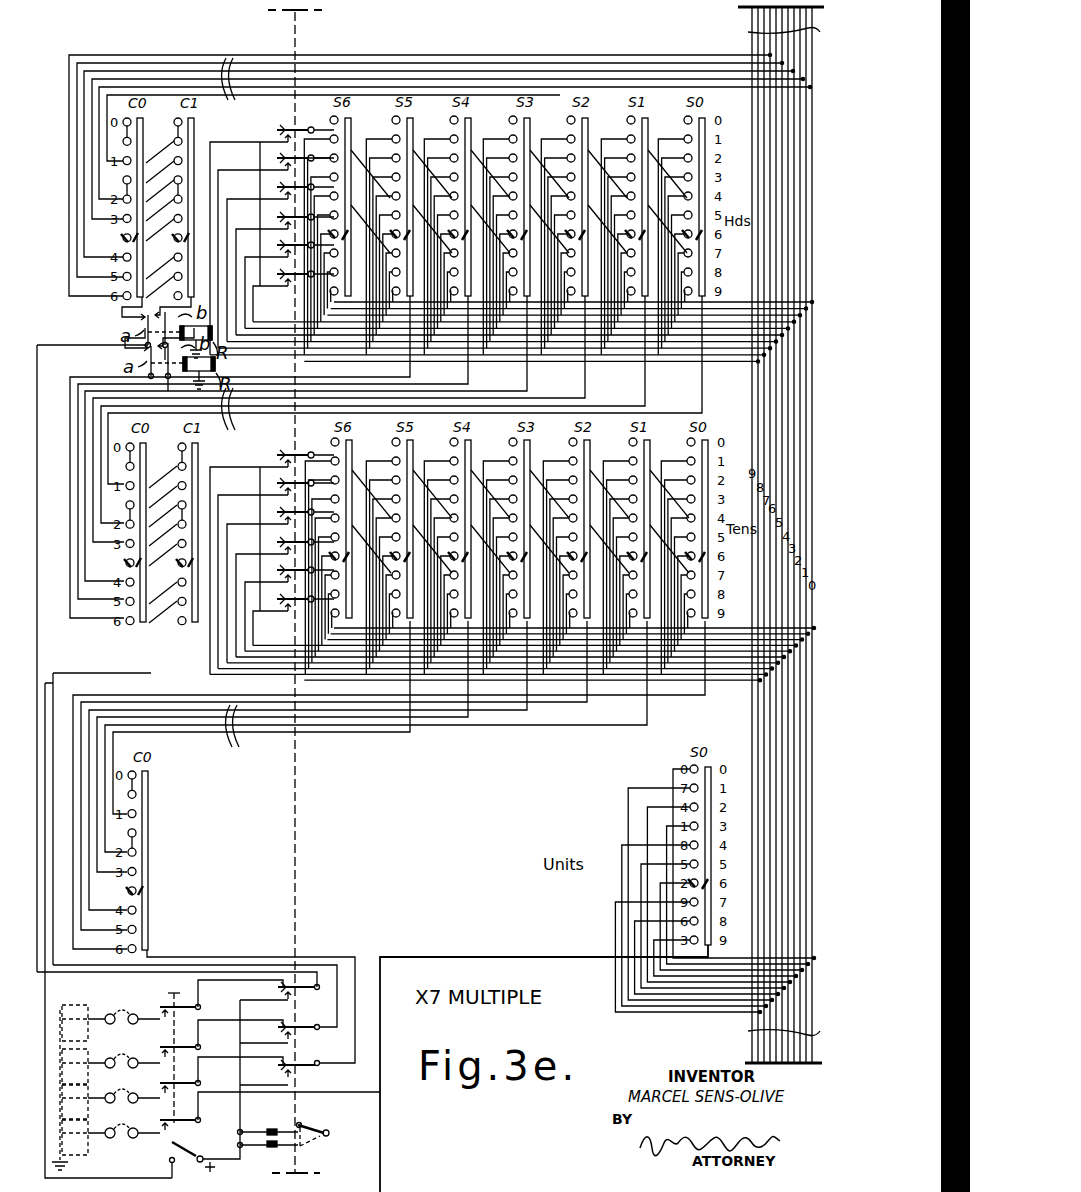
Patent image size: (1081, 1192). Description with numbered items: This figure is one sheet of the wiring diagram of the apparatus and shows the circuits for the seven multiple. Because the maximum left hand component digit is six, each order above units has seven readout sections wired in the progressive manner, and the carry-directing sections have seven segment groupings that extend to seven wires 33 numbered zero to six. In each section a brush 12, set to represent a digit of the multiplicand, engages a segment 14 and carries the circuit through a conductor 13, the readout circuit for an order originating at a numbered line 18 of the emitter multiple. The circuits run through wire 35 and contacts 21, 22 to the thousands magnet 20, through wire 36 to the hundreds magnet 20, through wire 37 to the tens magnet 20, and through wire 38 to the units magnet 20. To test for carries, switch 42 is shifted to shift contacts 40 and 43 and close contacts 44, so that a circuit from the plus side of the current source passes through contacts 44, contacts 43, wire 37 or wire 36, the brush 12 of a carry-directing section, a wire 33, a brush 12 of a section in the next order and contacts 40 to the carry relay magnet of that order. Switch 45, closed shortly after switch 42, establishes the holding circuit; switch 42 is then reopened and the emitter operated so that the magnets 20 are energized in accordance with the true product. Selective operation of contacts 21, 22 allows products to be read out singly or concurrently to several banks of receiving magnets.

The brush 12 is at (404, 232).
The conductor 13 is at (190, 126).
The segment 14 is at (130, 196).
The line 18 is at (770, 1048).
The magnet 20 is at (88, 1013).
The contacts 21 is at (192, 1048).
The contacts 22 is at (182, 1032).
The wire 33 is at (244, 406).
The wire 35 is at (170, 966).
The wire 36 is at (206, 968).
The wire 37 is at (244, 972).
The wire 38 is at (430, 958).
The contacts 40 is at (276, 141).
The switch 42 is at (328, 1128).
The contacts 43 is at (284, 1016).
The contacts 44 is at (280, 1132).
The switch 45 is at (186, 1150).